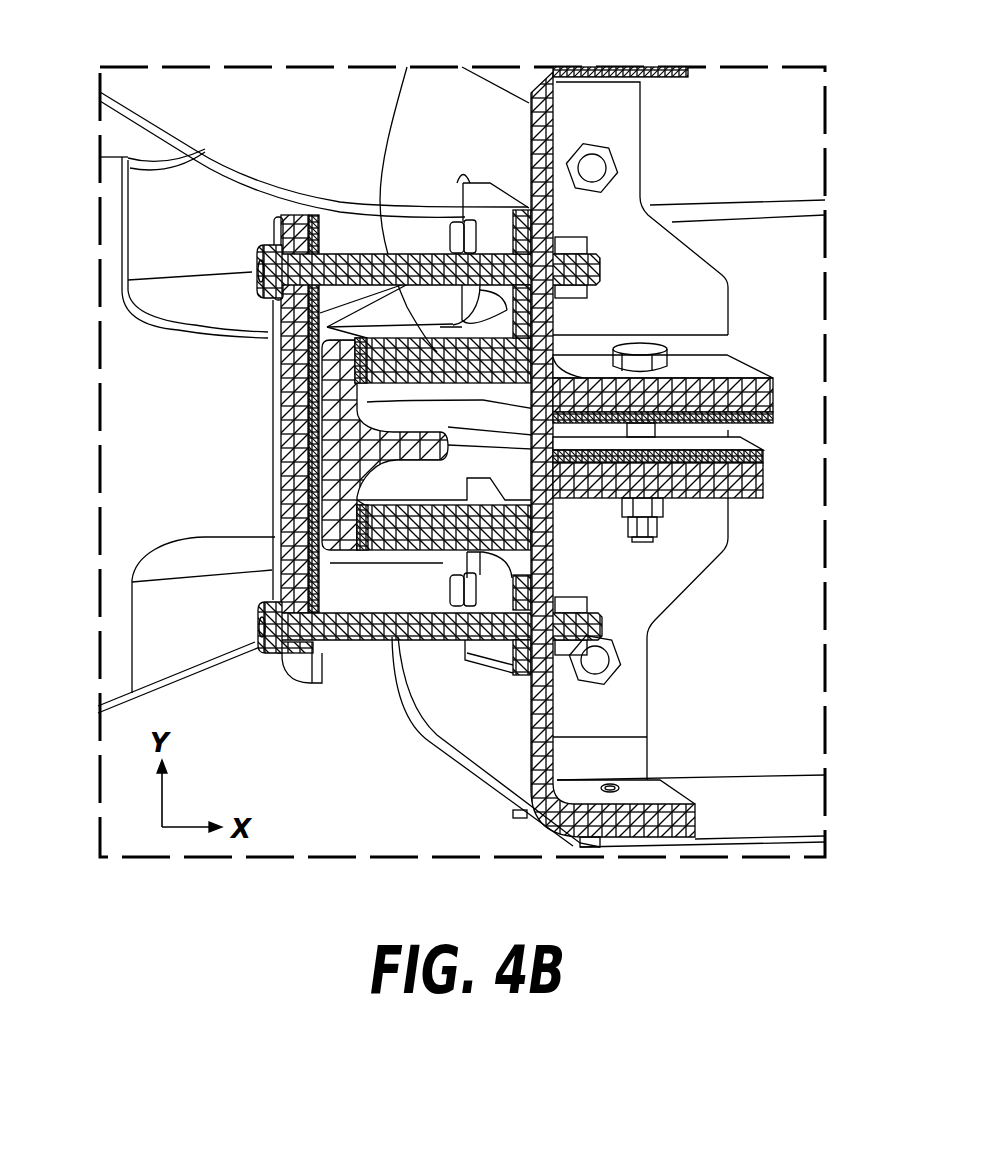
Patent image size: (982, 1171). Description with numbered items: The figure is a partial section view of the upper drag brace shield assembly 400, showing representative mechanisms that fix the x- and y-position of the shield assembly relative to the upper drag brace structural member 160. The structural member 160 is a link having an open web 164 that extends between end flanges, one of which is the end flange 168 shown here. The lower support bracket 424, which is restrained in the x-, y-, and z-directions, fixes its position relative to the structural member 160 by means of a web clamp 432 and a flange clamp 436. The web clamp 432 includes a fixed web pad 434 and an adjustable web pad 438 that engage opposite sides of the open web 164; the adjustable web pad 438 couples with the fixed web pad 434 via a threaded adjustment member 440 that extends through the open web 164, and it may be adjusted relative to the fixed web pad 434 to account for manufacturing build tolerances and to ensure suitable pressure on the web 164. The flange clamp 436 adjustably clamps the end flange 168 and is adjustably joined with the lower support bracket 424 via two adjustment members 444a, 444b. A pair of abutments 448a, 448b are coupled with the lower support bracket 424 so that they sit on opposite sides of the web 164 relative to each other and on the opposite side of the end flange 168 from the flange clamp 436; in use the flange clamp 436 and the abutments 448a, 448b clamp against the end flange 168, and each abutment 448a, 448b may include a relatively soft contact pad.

The upper drag brace shield assembly 400 is at (385, 104).
The upper drag brace structural member 160 is at (165, 186).
The open web 164 is at (797, 383).
The end flange 168 is at (342, 437).
The lower support bracket 424 is at (482, 733).
The web clamp 432 is at (718, 368).
The fixed web pad 434 is at (767, 397).
The flange clamp 436 is at (290, 215).
The adjustable web pad 438 is at (750, 480).
The threaded adjustment member 440 is at (650, 343).
The adjustment member 444a is at (380, 265).
The adjustment member 444b is at (347, 630).
The abutment 448a is at (437, 350).
The abutment 448b is at (418, 535).